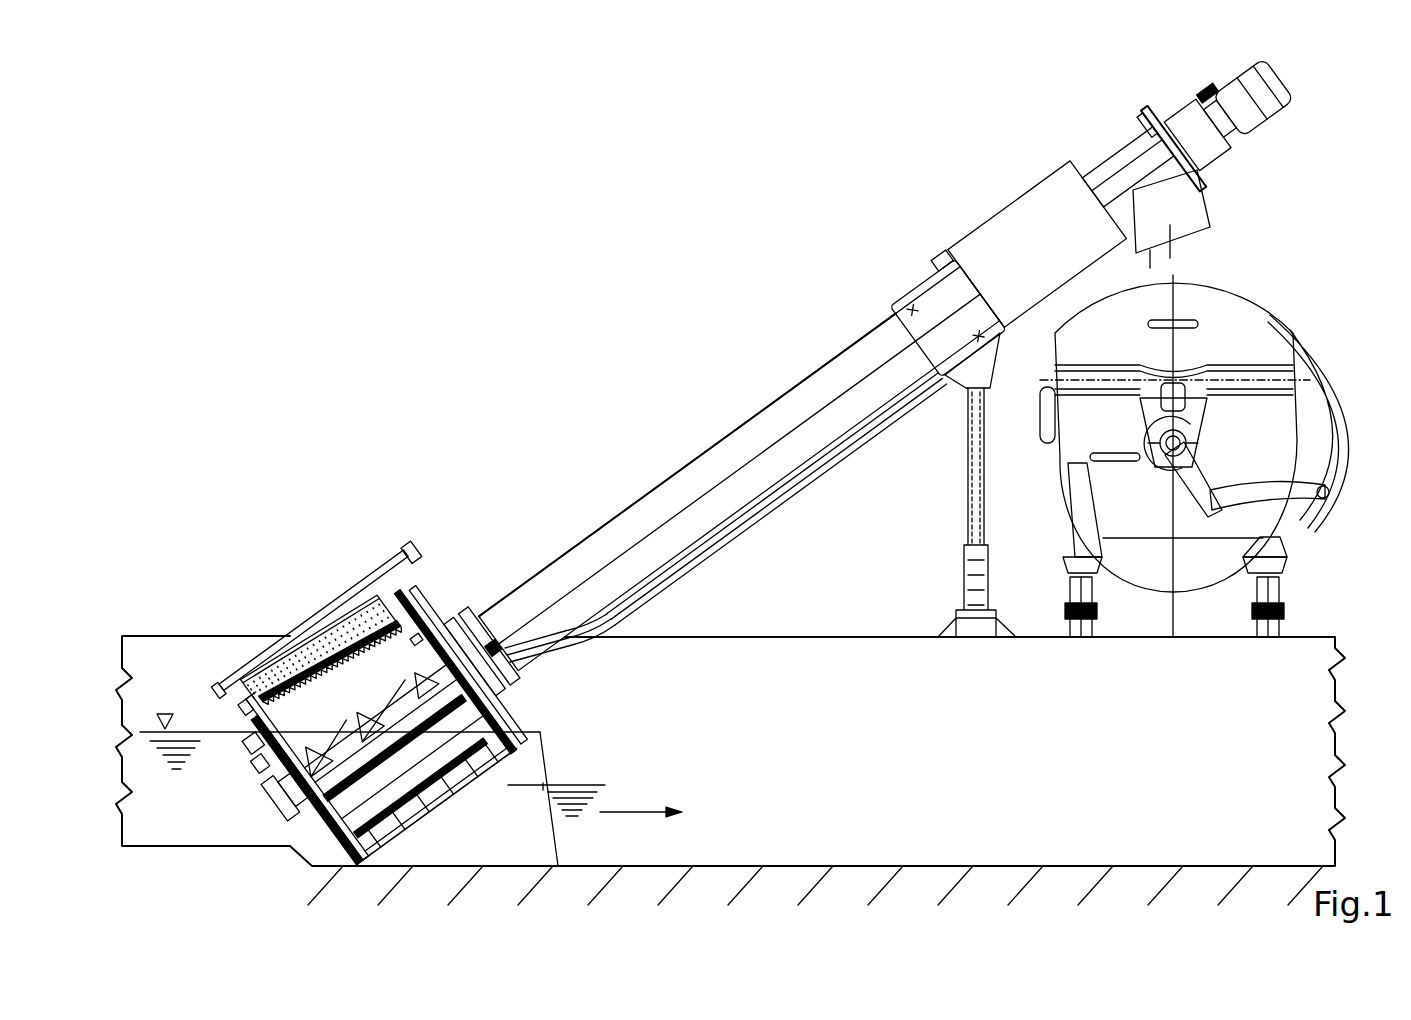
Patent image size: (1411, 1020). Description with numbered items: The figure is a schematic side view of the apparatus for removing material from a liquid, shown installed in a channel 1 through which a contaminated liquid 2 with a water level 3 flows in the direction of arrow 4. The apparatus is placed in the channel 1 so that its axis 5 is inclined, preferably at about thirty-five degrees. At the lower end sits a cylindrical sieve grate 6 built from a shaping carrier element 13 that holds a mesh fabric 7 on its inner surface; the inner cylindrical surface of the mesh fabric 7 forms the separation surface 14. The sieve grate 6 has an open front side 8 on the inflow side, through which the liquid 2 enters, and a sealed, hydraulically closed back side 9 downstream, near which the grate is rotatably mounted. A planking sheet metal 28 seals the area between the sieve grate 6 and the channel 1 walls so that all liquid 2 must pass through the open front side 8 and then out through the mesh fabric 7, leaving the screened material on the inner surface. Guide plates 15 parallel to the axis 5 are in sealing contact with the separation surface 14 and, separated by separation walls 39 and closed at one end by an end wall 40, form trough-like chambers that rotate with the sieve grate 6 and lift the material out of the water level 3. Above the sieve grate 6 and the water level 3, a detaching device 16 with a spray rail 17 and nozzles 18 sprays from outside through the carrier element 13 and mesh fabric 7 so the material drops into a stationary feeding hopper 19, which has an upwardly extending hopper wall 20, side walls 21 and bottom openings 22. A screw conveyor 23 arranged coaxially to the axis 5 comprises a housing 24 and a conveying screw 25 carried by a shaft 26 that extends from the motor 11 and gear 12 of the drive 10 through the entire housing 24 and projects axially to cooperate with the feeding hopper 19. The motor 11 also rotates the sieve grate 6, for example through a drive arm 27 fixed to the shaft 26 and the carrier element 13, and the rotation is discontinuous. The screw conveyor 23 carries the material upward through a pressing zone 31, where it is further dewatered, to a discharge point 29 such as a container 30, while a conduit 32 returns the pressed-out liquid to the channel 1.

The channel 1 is at (815, 662).
The liquid 2 is at (213, 738).
The water level 3 is at (165, 712).
The arrow 4 is at (636, 812).
The axis 5 is at (598, 572).
The sieve grate 6 is at (412, 830).
The mesh fabric 7 is at (333, 812).
The open front side 8 is at (298, 803).
The back side 9 is at (545, 800).
The drive 10 is at (1294, 133).
The motor 11 is at (1240, 145).
The gear 12 is at (1208, 157).
The carrier element 13 is at (378, 838).
The separation surface 14 is at (348, 855).
The guide plates 15 is at (461, 768).
The detaching device 16 is at (294, 604).
The spray rail 17 is at (317, 627).
The nozzles 18 is at (367, 600).
The feeding hopper 19 is at (419, 634).
The hopper wall 20 is at (268, 772).
The side walls 21 is at (440, 660).
The openings 22 is at (485, 745).
The screw conveyor 23 is at (648, 480).
The housing 24 is at (715, 462).
The conveying screw 25 is at (398, 604).
The shaft 26 is at (458, 615).
The drive arm 27 is at (273, 792).
The planking sheet metal 28 is at (267, 722).
The discharge point 29 is at (1197, 228).
The container 30 is at (1238, 322).
The pressing zone 31 is at (988, 250).
The conduit 32 is at (828, 460).
The separation walls 39 is at (290, 690).
The end wall 40 is at (247, 750).